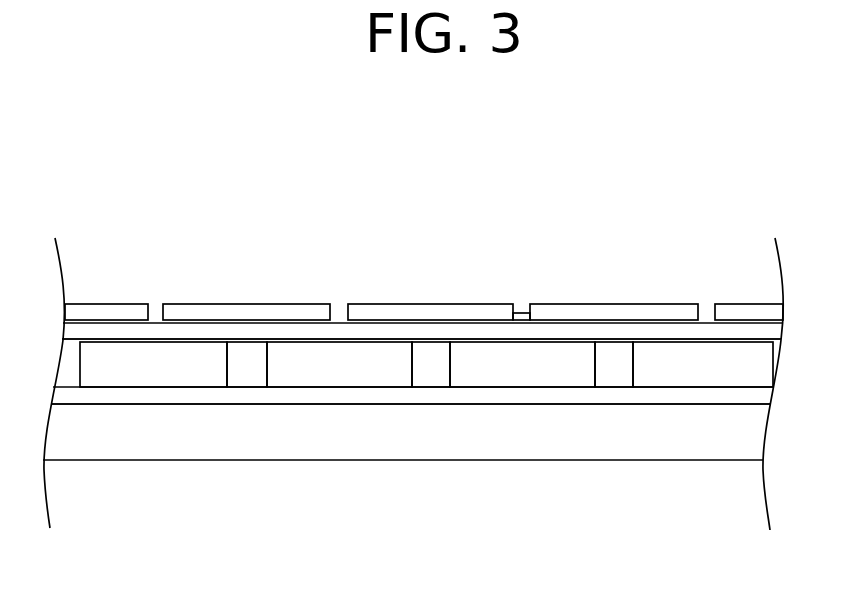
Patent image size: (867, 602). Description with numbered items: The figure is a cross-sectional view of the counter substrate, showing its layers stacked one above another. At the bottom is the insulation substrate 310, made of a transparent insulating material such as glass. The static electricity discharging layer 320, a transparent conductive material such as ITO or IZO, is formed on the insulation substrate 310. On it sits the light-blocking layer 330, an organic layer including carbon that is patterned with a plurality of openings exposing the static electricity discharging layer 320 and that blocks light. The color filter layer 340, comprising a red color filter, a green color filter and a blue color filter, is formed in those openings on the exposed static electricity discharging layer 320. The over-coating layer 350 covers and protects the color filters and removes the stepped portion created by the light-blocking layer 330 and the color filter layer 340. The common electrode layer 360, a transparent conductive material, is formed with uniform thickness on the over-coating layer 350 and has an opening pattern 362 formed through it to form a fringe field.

The insulation substrate 310 is at (605, 427).
The static electricity discharging layer 320 is at (517, 393).
The light-blocking layer 330 is at (432, 378).
The color filter layer 340 is at (313, 360).
The over-coating layer 350 is at (213, 330).
The common electrode layer 360 is at (243, 312).
The opening pattern 362 is at (521, 308).